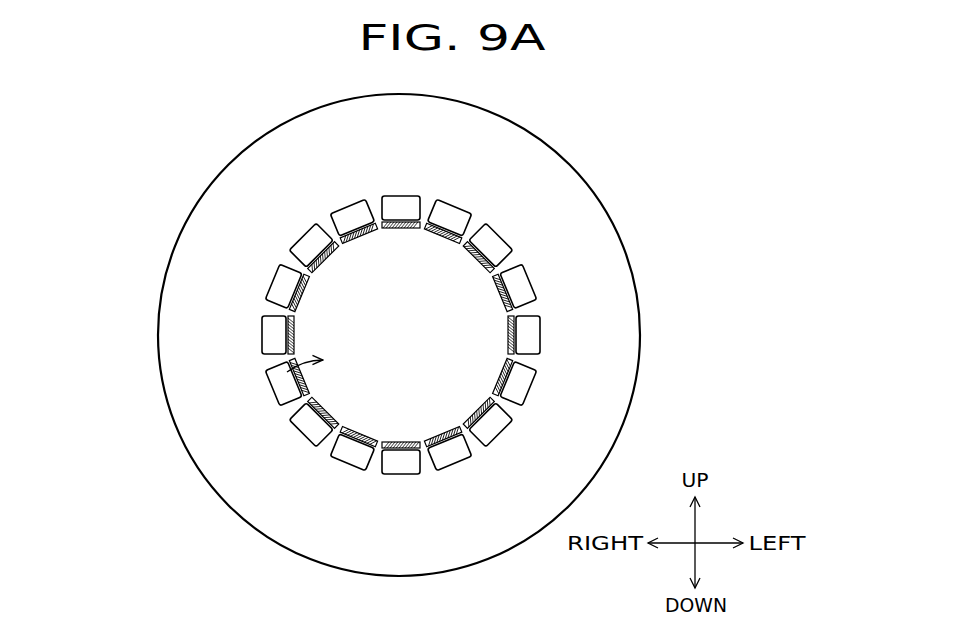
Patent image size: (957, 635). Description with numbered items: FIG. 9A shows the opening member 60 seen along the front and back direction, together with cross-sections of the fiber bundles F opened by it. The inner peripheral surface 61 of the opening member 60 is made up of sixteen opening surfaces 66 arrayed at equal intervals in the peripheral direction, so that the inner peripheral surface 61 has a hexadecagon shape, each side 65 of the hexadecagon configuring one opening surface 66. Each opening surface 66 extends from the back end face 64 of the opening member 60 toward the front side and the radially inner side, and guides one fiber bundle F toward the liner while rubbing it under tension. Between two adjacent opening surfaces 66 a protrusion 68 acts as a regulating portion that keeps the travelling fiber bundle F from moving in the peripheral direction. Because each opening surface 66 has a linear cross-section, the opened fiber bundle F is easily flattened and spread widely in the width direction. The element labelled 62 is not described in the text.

The opening member 60 is at (414, 326).
The inner peripheral surface 61 is at (510, 371).
The stator core 62 is at (263, 378).
The back end face 64 is at (248, 462).
The side 65 is at (510, 303).
The opening surface 66 is at (490, 242).
The protrusion 68 is at (462, 232).
The fiber bundle F is at (300, 238).